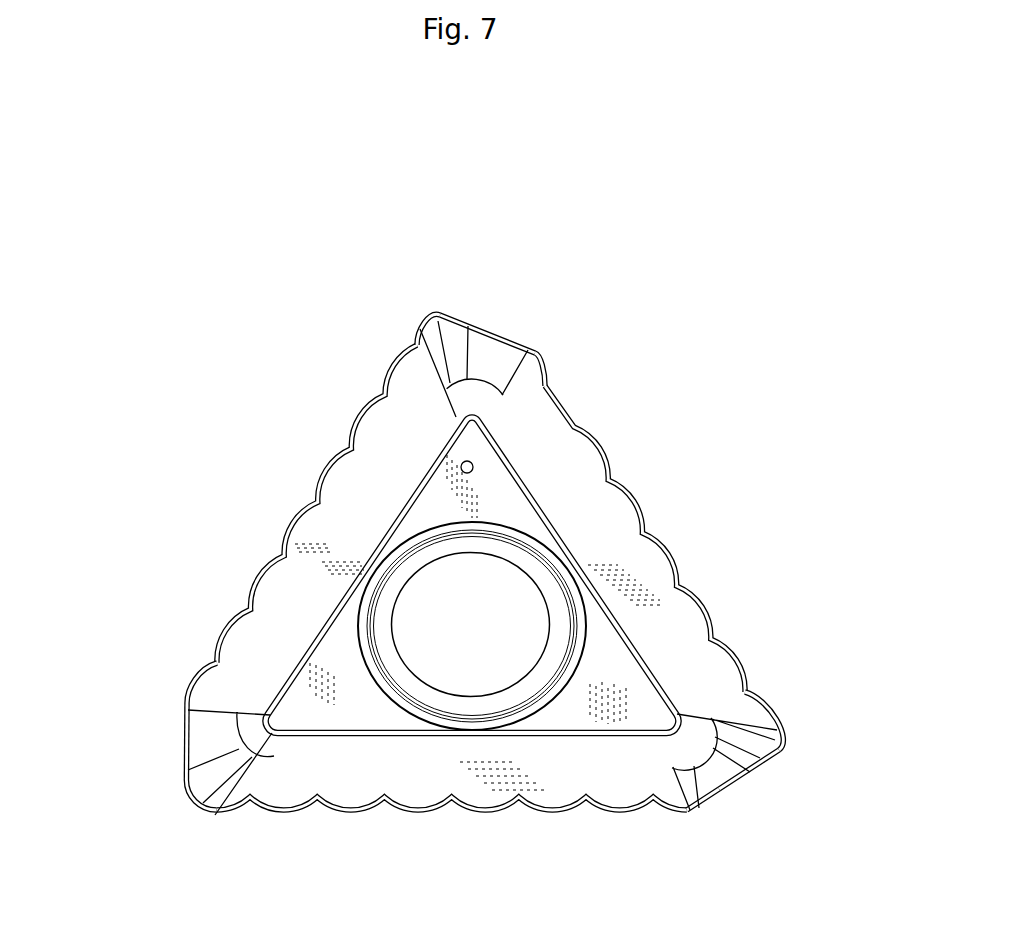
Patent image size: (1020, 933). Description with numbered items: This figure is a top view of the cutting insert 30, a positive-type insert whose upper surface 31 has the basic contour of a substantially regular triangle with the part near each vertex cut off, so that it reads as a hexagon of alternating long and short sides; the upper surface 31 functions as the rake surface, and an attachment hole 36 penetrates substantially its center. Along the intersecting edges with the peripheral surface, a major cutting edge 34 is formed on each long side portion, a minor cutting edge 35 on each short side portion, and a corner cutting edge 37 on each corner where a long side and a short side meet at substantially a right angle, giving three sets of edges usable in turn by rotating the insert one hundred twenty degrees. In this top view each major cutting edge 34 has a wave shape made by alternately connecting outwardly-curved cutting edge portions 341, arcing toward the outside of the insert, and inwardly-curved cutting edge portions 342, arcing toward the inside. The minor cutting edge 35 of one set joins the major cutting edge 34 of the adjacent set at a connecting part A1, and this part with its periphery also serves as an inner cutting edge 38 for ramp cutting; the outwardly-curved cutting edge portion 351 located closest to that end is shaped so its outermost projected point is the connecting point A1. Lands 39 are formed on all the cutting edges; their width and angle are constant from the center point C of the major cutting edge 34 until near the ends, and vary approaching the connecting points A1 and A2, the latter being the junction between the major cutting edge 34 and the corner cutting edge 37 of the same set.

The cutting insert 30 is at (634, 219).
The upper surface 31 is at (440, 503).
The major cutting edge 34 is at (620, 497).
The minor cutting edge 35 is at (494, 328).
The attachment hole 36 is at (357, 642).
The corner cutting edge 37 is at (434, 313).
The inner cutting edge 38 is at (415, 628).
The land 39 is at (481, 421).
The outwardly-curved cutting edge portion 341 is at (680, 572).
The inwardly-curved cutting edge portion 342 is at (683, 607).
The outwardly-curved cutting edge portion located closest to the end 351 is at (543, 360).
The connecting part A1 is at (545, 356).
The connecting point A2 is at (414, 327).
The center point C is at (647, 532).